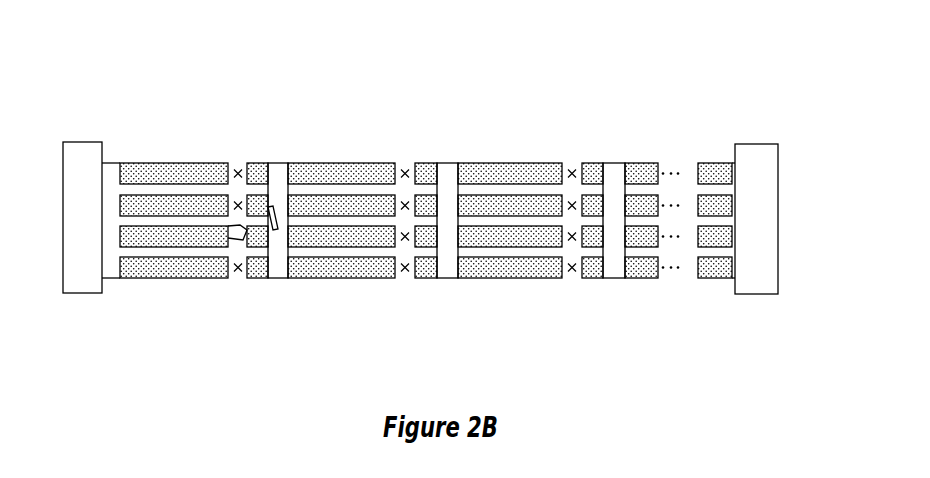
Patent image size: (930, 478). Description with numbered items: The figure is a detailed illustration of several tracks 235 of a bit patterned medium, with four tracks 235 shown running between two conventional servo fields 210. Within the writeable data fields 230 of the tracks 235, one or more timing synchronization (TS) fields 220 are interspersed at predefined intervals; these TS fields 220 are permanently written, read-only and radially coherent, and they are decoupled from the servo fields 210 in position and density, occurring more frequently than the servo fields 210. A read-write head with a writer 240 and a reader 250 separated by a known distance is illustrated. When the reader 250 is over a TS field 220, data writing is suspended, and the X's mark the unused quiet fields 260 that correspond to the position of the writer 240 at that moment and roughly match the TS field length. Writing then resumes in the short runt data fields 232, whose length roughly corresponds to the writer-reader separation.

The servo fields 210 is at (79, 270).
The TS fields 220 is at (289, 158).
The data fields 230 is at (145, 163).
The runt data fields 232 is at (250, 166).
The tracks 235 is at (528, 180).
The writer 240 is at (226, 242).
The reader 250 is at (277, 238).
The quiet fields 260 is at (388, 326).